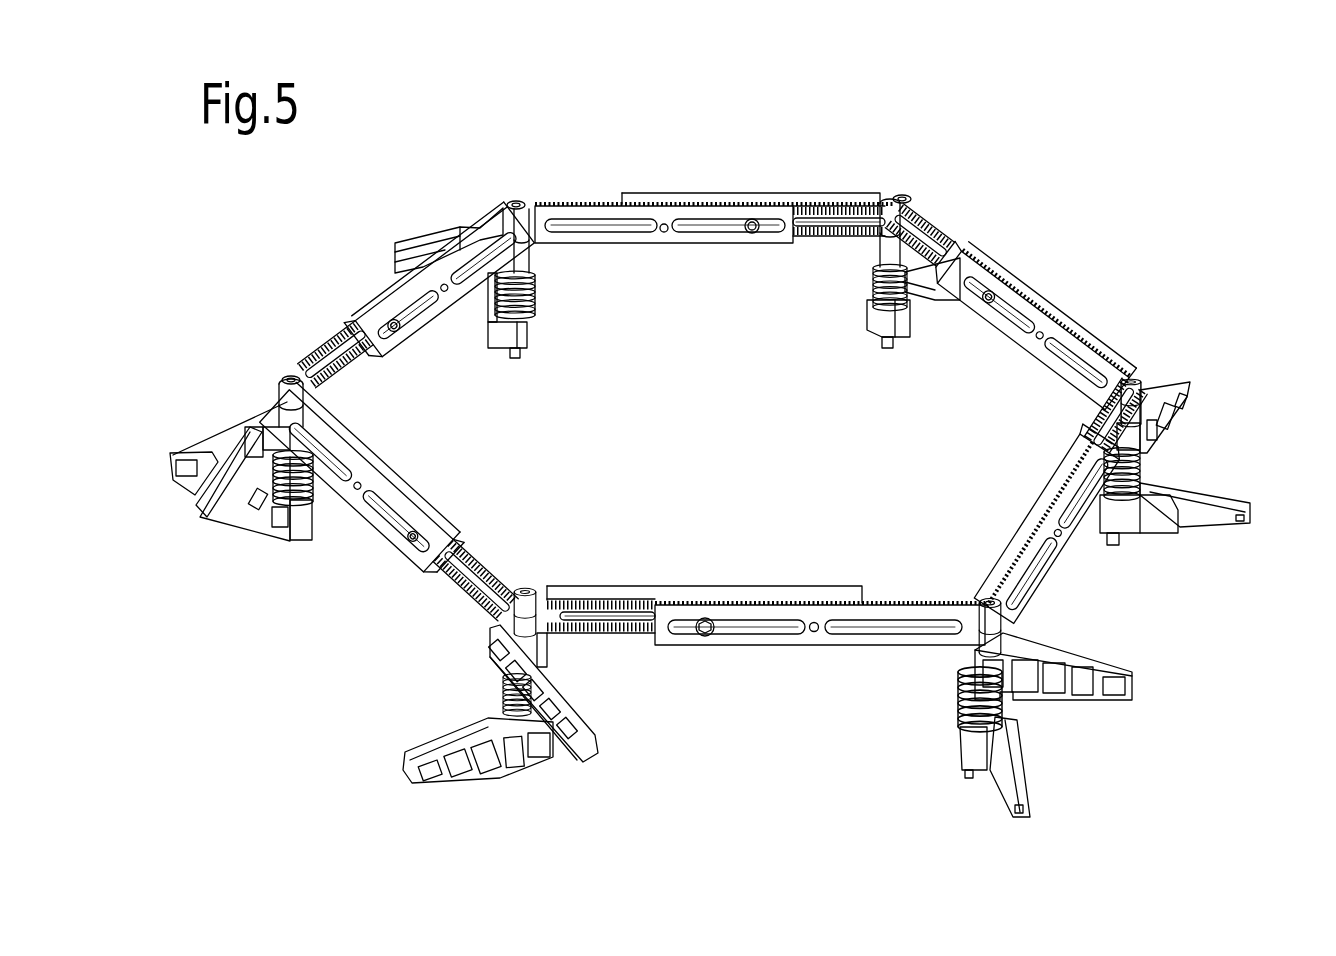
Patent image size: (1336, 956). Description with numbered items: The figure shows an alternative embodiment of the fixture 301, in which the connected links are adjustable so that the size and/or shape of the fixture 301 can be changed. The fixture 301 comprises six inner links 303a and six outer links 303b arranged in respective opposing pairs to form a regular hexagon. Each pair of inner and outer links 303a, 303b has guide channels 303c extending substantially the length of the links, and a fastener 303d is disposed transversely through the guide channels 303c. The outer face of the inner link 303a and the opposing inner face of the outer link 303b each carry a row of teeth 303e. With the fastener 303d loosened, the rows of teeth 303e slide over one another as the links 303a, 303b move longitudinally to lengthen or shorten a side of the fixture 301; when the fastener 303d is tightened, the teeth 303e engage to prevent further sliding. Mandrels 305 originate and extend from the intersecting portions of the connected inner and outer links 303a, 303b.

The fixture 301 is at (948, 137).
The inner link 303a is at (565, 203).
The outer link 303b is at (820, 205).
The guide channel 303c is at (1003, 320).
The fastener 303d is at (814, 632).
The row of teeth 303e is at (600, 633).
The mandrel 305 is at (532, 585).